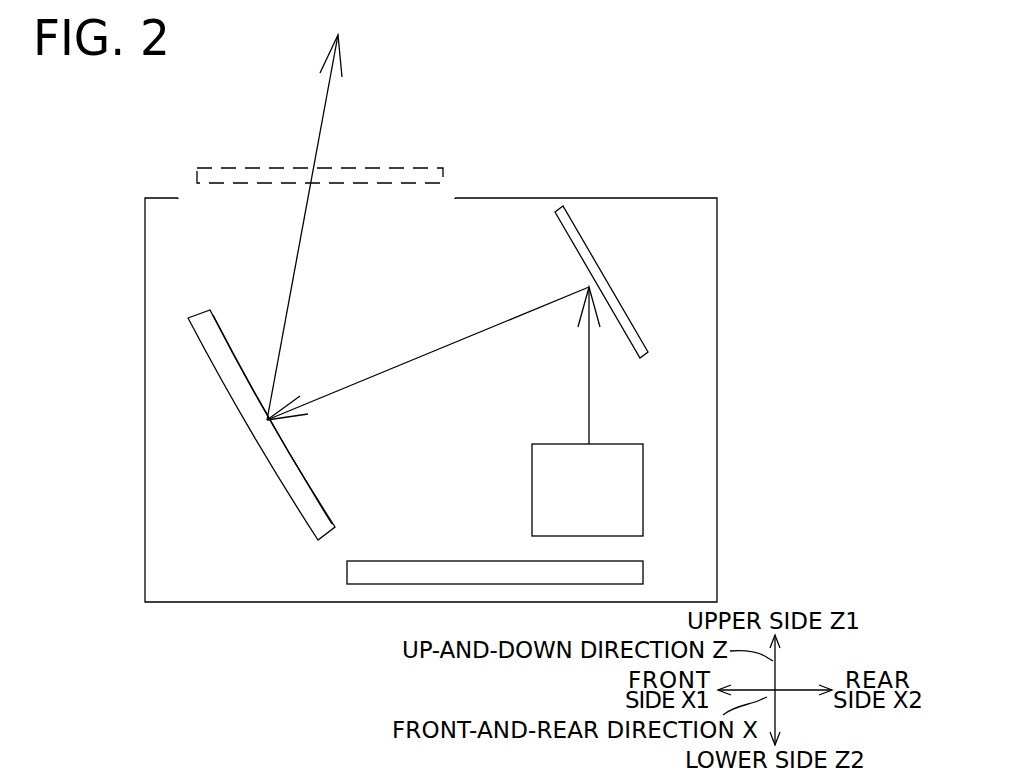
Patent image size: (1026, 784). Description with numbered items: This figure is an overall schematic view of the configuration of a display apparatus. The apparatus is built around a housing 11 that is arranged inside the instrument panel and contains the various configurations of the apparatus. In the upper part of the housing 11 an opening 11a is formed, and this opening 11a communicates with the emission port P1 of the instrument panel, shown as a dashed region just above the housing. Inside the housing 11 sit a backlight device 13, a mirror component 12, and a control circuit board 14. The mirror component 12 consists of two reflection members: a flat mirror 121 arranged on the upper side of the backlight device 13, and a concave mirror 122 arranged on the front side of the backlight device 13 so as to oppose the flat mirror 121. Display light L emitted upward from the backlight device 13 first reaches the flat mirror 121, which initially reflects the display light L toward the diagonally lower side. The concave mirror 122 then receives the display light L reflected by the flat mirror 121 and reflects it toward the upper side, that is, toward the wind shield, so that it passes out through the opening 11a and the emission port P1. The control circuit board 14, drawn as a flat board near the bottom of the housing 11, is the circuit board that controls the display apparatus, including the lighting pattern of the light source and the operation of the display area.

The housing 11 is at (717, 268).
The opening 11a is at (458, 198).
The emission port P1 is at (372, 160).
The mirror component 12 is at (430, 373).
The flat mirror 121 is at (641, 334).
The concave mirror 122 is at (255, 445).
The display light L is at (428, 355).
The backlight device 13 is at (643, 492).
The control circuit board 14 is at (643, 573).